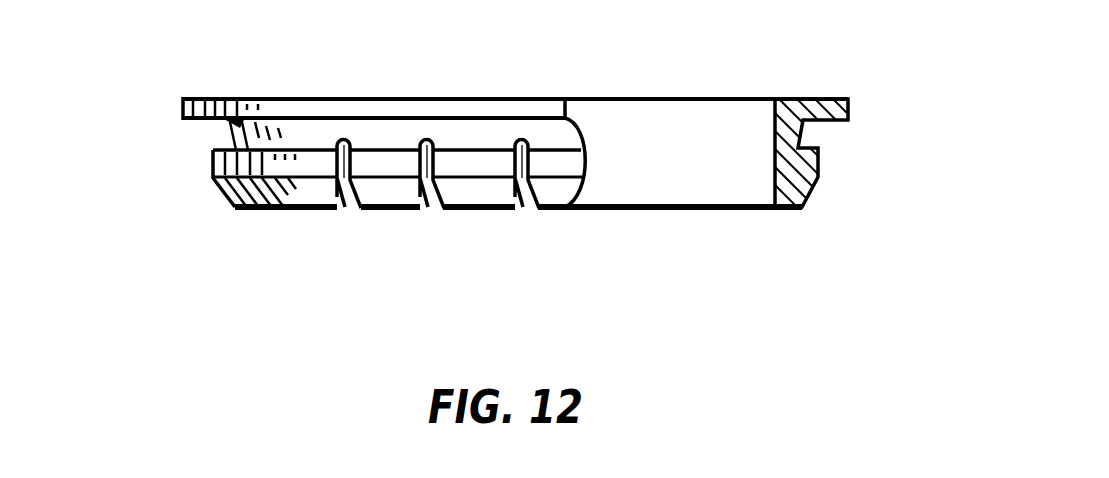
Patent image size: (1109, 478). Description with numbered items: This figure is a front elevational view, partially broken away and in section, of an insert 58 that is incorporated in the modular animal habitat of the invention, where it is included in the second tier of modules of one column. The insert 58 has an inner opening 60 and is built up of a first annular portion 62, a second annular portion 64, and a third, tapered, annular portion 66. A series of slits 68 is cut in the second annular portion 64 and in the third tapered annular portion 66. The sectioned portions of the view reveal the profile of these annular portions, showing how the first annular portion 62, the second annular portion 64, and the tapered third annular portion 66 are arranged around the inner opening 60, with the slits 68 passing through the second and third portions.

The insert 58 is at (524, 175).
The inner opening 60 is at (773, 142).
The first annular portion 62 is at (180, 104).
The second annular portion 64 is at (345, 228).
The third tapered annular portion 66 is at (812, 193).
The slits 68 is at (437, 207).